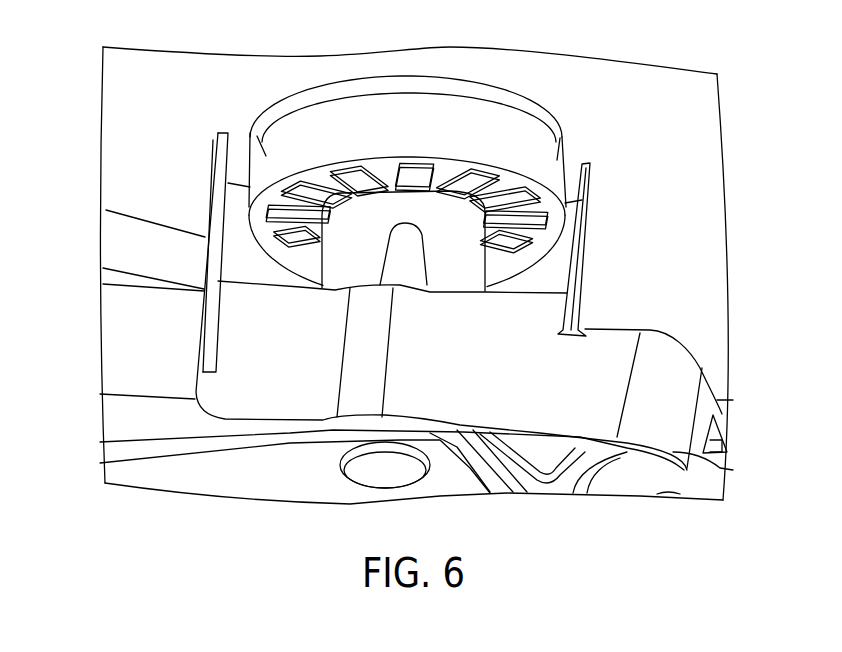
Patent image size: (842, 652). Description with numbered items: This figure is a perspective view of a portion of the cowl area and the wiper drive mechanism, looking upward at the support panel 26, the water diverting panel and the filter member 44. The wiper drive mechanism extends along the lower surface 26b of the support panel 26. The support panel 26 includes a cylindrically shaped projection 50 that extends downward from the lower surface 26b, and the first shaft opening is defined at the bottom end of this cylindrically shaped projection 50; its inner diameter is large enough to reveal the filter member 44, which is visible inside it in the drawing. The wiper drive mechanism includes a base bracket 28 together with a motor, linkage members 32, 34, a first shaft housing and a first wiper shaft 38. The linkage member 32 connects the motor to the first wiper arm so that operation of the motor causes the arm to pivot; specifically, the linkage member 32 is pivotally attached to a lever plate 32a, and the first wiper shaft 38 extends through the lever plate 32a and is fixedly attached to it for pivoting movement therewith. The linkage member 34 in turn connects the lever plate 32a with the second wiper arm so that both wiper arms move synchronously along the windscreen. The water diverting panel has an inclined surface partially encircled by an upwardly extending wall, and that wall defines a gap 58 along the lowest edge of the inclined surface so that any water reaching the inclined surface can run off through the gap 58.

The support panel 26 is at (677, 162).
The lower surface 26b is at (607, 207).
The linkage member 34 is at (128, 245).
The base bracket 28 is at (140, 350).
The filter member 44 is at (458, 150).
The cylindrically shaped projection 50 is at (523, 137).
The gap 58 is at (562, 314).
The linkage member 32 is at (703, 483).
The lever plate 32a is at (453, 470).
The first wiper shaft 38 is at (378, 468).